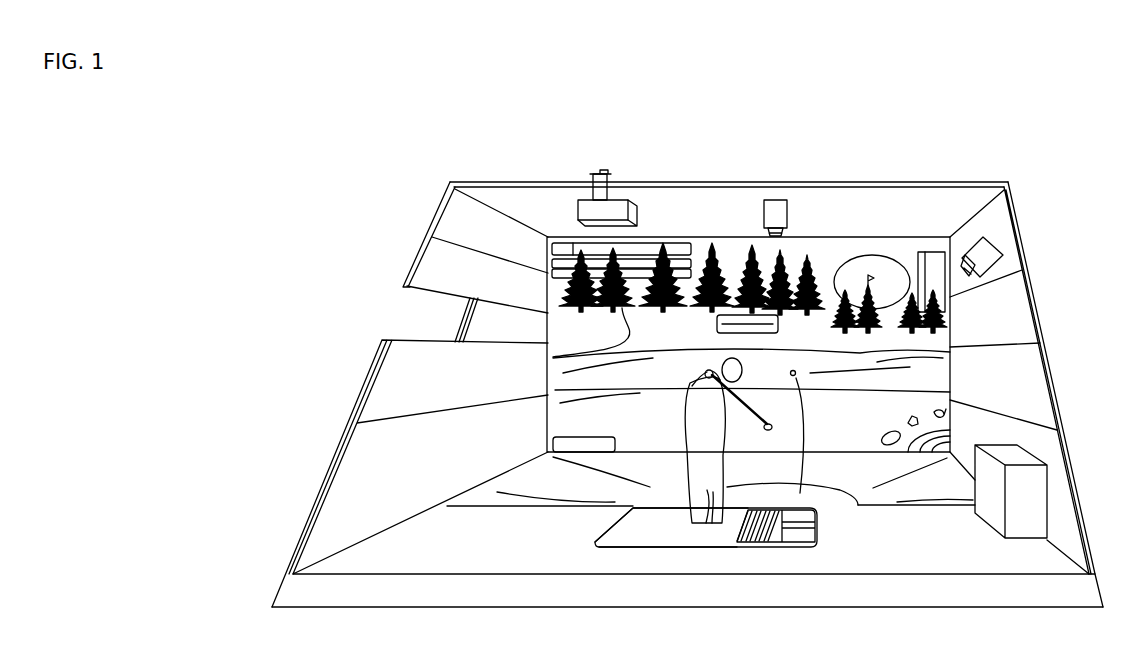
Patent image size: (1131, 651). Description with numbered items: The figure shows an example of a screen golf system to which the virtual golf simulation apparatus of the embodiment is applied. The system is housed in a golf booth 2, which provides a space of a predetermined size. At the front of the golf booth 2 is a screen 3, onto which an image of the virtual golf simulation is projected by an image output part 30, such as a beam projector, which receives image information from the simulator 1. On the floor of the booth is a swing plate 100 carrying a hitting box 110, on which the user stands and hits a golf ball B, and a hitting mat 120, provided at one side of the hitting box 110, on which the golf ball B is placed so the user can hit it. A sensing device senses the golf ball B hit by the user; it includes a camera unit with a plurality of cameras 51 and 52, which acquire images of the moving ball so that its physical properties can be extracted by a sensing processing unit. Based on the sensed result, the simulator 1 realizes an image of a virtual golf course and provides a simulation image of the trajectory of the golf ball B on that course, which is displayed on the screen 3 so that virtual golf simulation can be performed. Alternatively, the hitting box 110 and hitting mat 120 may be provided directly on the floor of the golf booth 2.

The simulator 1 is at (1018, 452).
The golf booth 2 is at (418, 230).
The screen 3 is at (958, 373).
The image output part 30 is at (635, 201).
The camera 51 is at (990, 252).
The camera 52 is at (777, 200).
The swing plate 100 is at (648, 556).
The hitting box 110 is at (618, 520).
The hitting mat 120 is at (823, 525).
The golf ball B is at (796, 377).